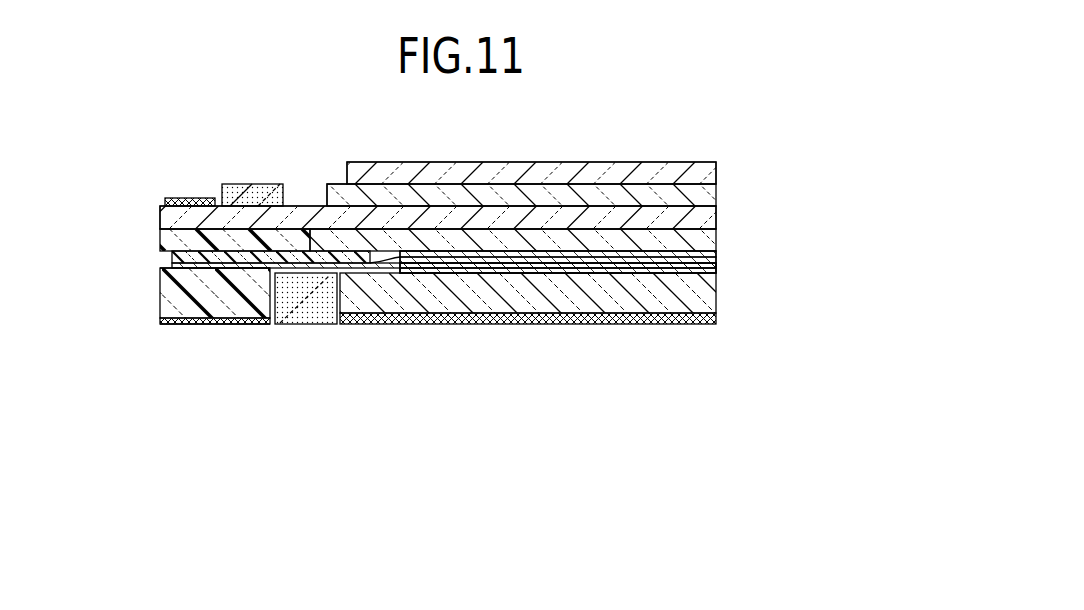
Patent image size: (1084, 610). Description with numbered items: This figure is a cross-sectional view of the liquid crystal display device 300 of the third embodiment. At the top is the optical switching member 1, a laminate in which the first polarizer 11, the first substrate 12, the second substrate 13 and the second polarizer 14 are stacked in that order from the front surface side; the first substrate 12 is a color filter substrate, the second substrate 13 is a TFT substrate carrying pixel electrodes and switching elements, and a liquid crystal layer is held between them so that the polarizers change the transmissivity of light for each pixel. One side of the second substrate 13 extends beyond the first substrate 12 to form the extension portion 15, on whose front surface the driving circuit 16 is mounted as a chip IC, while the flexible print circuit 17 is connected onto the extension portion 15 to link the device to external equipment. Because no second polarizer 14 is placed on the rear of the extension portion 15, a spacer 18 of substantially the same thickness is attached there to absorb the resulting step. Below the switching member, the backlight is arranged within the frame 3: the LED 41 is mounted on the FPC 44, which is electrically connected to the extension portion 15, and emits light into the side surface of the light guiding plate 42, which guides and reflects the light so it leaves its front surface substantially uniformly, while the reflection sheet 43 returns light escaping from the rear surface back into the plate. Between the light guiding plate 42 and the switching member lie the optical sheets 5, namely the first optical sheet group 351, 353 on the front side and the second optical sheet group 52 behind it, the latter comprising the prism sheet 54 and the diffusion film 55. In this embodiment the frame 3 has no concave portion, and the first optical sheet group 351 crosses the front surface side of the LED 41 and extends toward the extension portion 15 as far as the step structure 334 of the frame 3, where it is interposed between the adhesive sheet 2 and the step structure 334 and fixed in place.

The optical switching member 1 is at (805, 135).
The first polarizer 11 is at (718, 172).
The first substrate 12 is at (718, 195).
The second substrate 13 is at (718, 218).
The second polarizer 14 is at (718, 243).
The extension portion 15 is at (310, 205).
The driving circuit 16 is at (250, 184).
The flexible print circuit 17 is at (205, 197).
The spacer 18 is at (155, 233).
The adhesive sheet 2 is at (170, 256).
The frame 3 is at (160, 288).
The step structure 334 is at (186, 324).
The FPC 44 is at (230, 325).
The LED 41 is at (308, 325).
The light guiding plate 42 is at (720, 298).
The reflection sheet 43 is at (632, 325).
The flexible wiring board 5 is at (903, 250).
The first optical sheet group 351 is at (639, 263).
The lower wiring layer 353 is at (718, 258).
The second optical sheet group 52 is at (822, 277).
The prism sheet 54 is at (718, 266).
The diffusion film 55 is at (718, 271).
The liquid crystal display device 300 is at (284, 438).